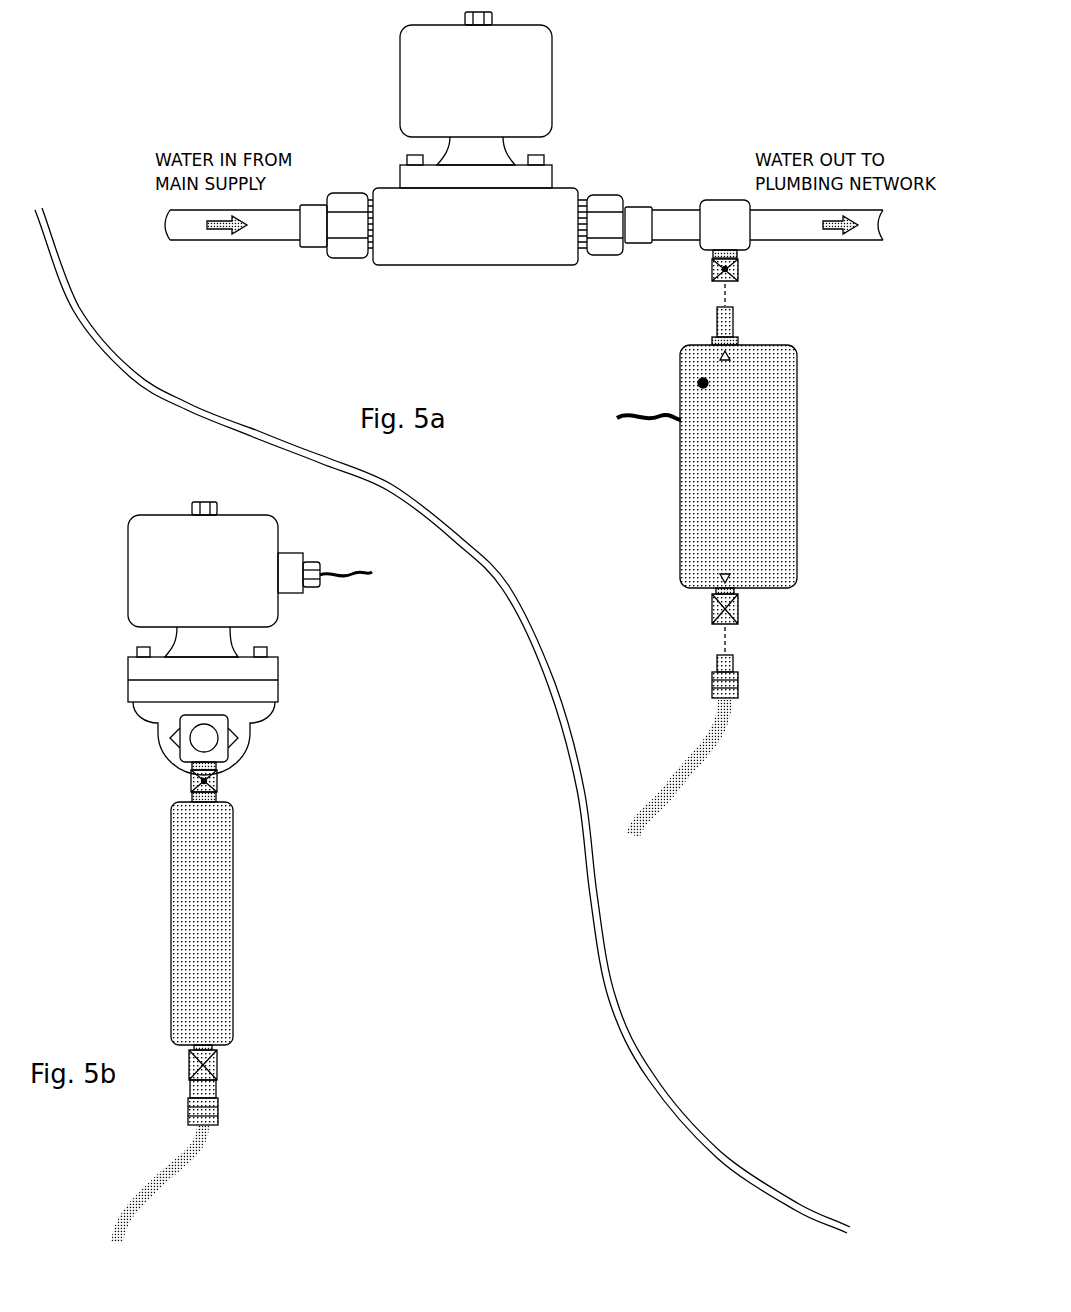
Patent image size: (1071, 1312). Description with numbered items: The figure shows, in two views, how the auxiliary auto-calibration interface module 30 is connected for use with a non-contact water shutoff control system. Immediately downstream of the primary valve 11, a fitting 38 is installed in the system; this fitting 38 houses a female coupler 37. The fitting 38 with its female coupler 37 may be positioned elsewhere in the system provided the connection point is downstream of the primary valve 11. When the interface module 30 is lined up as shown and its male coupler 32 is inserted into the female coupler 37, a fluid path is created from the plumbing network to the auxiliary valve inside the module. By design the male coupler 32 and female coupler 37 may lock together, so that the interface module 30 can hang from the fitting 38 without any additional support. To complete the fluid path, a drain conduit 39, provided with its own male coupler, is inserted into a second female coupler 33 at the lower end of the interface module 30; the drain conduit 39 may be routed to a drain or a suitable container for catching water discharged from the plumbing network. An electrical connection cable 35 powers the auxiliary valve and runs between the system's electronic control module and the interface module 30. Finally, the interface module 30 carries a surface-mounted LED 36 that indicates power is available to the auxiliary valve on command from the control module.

In FIG. 5A, the primary valve 11 is at (390, 175).
In FIG. 5B, the primary valve 11 is at (290, 680).
In FIG. 5A, the interface module 30 is at (802, 445).
In FIG. 5B, the interface module 30 is at (242, 905).
In FIG. 5A, the male coupler 32 is at (742, 335).
In FIG. 5B, the male coupler 32 is at (218, 792).
In FIG. 5A, the female coupler 33 is at (742, 605).
In FIG. 5B, the female coupler 33 is at (222, 1053).
In FIG. 5A, the electrical connection cable 35 is at (610, 420).
In FIG. 5A, the surface-mounted LED 36 is at (698, 382).
In FIG. 5A, the female coupler 37 is at (742, 262).
In FIG. 5B, the female coupler 37 is at (223, 780).
In FIG. 5A, the fitting 38 is at (708, 198).
In FIG. 5B, the fitting 38 is at (230, 738).
In FIG. 5A, the drain conduit 39 is at (740, 718).
In FIG. 5B, the drain conduit 39 is at (222, 1103).